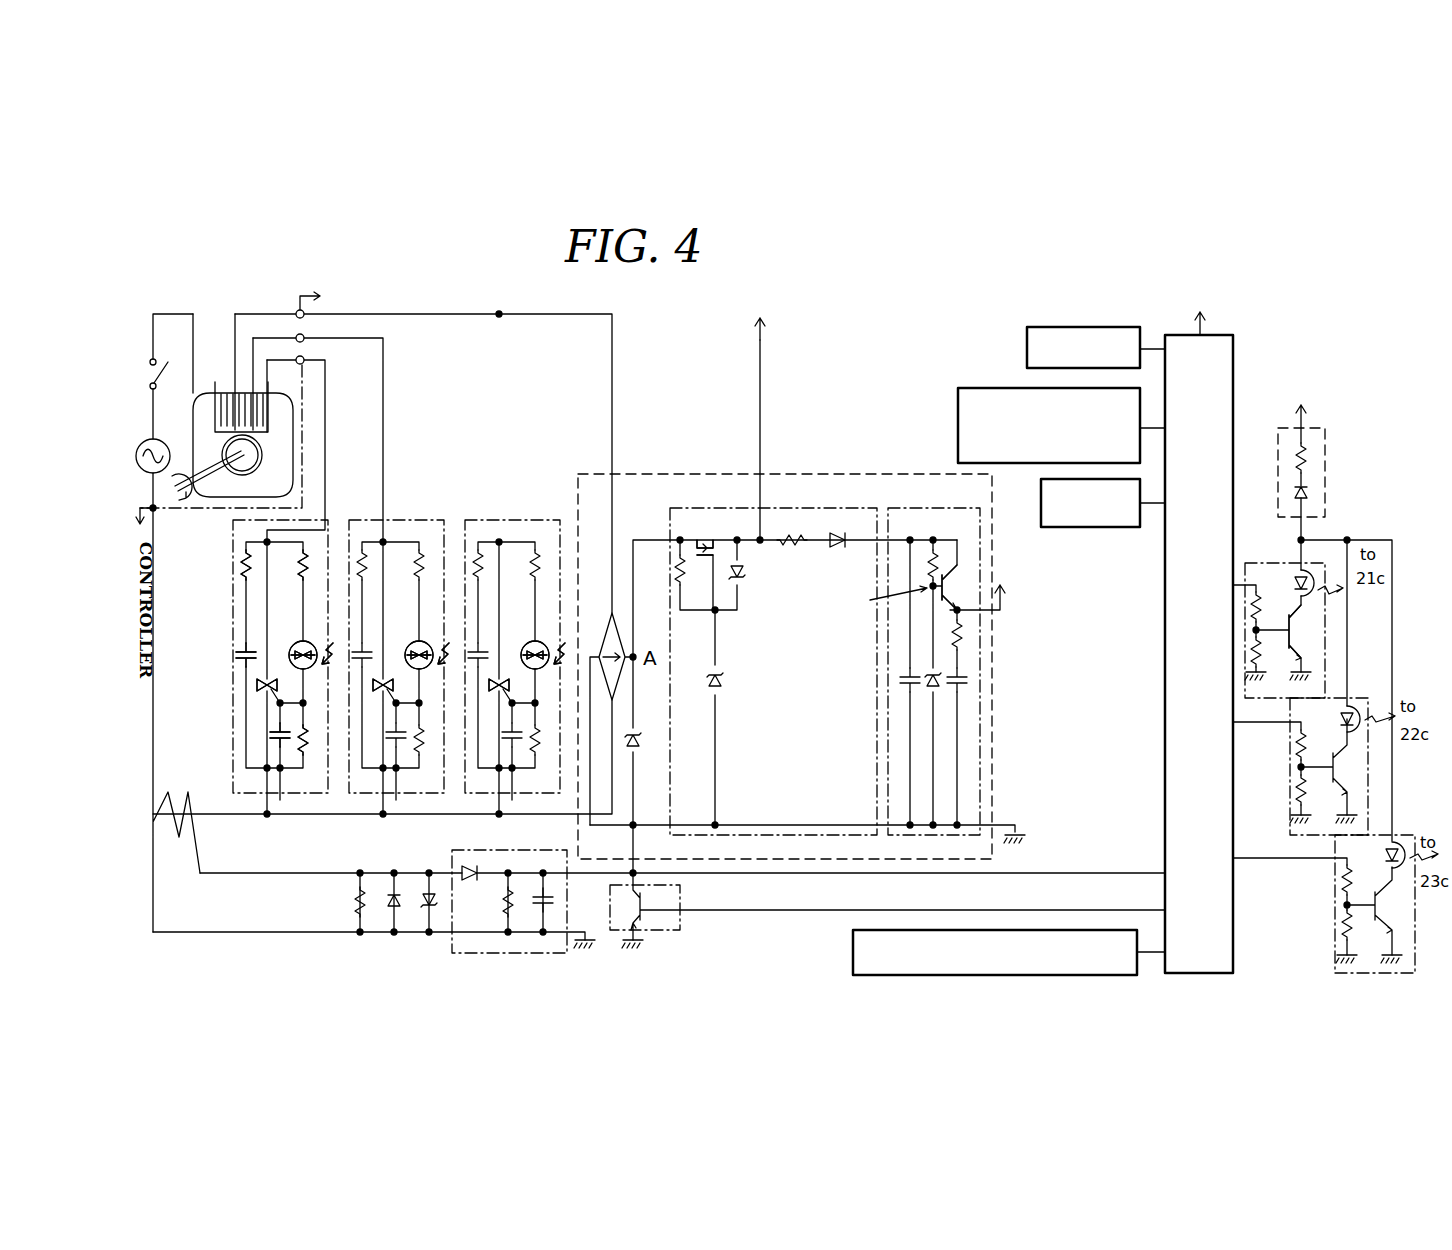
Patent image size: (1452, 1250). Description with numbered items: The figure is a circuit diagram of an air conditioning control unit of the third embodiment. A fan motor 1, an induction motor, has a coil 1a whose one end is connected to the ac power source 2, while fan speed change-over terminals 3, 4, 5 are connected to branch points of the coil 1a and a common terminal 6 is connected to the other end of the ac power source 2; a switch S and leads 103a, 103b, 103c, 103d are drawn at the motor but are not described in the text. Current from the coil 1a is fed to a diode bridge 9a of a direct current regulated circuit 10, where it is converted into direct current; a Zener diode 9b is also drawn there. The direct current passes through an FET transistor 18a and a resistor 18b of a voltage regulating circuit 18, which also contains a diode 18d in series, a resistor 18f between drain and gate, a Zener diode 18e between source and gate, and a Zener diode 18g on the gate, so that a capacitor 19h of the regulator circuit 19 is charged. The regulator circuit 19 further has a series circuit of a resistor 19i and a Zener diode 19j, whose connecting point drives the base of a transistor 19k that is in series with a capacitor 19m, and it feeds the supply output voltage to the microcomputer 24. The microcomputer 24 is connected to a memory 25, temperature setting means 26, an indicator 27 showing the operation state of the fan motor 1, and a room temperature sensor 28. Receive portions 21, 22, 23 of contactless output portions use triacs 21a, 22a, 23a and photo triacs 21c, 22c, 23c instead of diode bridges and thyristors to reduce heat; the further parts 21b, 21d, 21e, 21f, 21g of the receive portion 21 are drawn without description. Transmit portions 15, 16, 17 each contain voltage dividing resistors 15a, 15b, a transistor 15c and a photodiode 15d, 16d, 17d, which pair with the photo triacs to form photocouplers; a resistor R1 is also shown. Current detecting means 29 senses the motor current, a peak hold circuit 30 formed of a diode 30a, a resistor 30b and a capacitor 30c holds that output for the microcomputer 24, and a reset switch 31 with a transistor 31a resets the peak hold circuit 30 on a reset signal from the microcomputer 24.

The fan motor 1 is at (226, 379).
The coil 1a is at (222, 417).
The ac power source 2 is at (146, 447).
The fan speed change-over terminal 3 is at (296, 312).
The fan speed change-over terminal 4 is at (304, 338).
The fan speed change-over terminal 5 is at (302, 364).
The common terminal 6 is at (150, 507).
The power switch S is at (147, 374).
The heater lead 103a is at (235, 322).
The heater lead 103b is at (253, 347).
The heater lead 103c is at (266, 372).
The heater lead 103d is at (160, 312).
The diode bridge 9a is at (604, 622).
The zener diode 9b is at (639, 733).
The direct current regulated circuit 10 is at (878, 474).
The voltage regulating circuit 18 is at (813, 565).
The FET transistor 18a is at (713, 526).
The resistor 18b is at (793, 533).
The diode 18d is at (845, 468).
The Zener diode 18e is at (742, 584).
The resistor 18f is at (678, 596).
The Zener diode 18g is at (708, 686).
The regulator circuit 19 is at (941, 671).
The capacitor 19h is at (902, 682).
The resistor 19i is at (933, 552).
The Zener diode 19j is at (946, 690).
The transistor 19k is at (950, 584).
The capacitor 19m is at (966, 683).
The receive portion 21 is at (272, 675).
The triac 21a is at (262, 690).
The resistor 21b is at (246, 582).
The photo triac 21c is at (298, 647).
The resistor 21d is at (306, 567).
The resistor 21e is at (306, 760).
The capacitor 21f is at (289, 780).
The capacitor 21g is at (246, 655).
The receive portion 22 is at (399, 651).
The triac 22a is at (381, 775).
The photo triac 22c is at (422, 560).
The receive portion 23 is at (516, 663).
The triac 23a is at (496, 775).
The photo triac 23c is at (538, 562).
The microcomputer 24 is at (1171, 335).
The memory 25 is at (1027, 350).
The temperature setting means 26 is at (958, 414).
The indicator 27 is at (1122, 528).
The room temperature sensor 28 is at (853, 961).
The current detecting means 29 is at (170, 795).
The peak hold circuit 30 is at (502, 896).
The diode 30a is at (462, 868).
The resistor 30b is at (505, 902).
The capacitor 30c is at (552, 900).
The reset switch 31 is at (887, 913).
The transistor 31a is at (640, 922).
The resistor R1 is at (1325, 484).
The transmit portion 15 is at (1313, 607).
The voltage dividing resistor 15a is at (1257, 594).
The voltage dividing resistor 15b is at (1268, 656).
The transistor 15c is at (1298, 640).
The photodiode 15d is at (1312, 580).
The transmit portion 16 is at (1337, 766).
The photodiode 16d is at (1362, 729).
The transmit portion 17 is at (1335, 904).
The photodiode 17d is at (1380, 853).